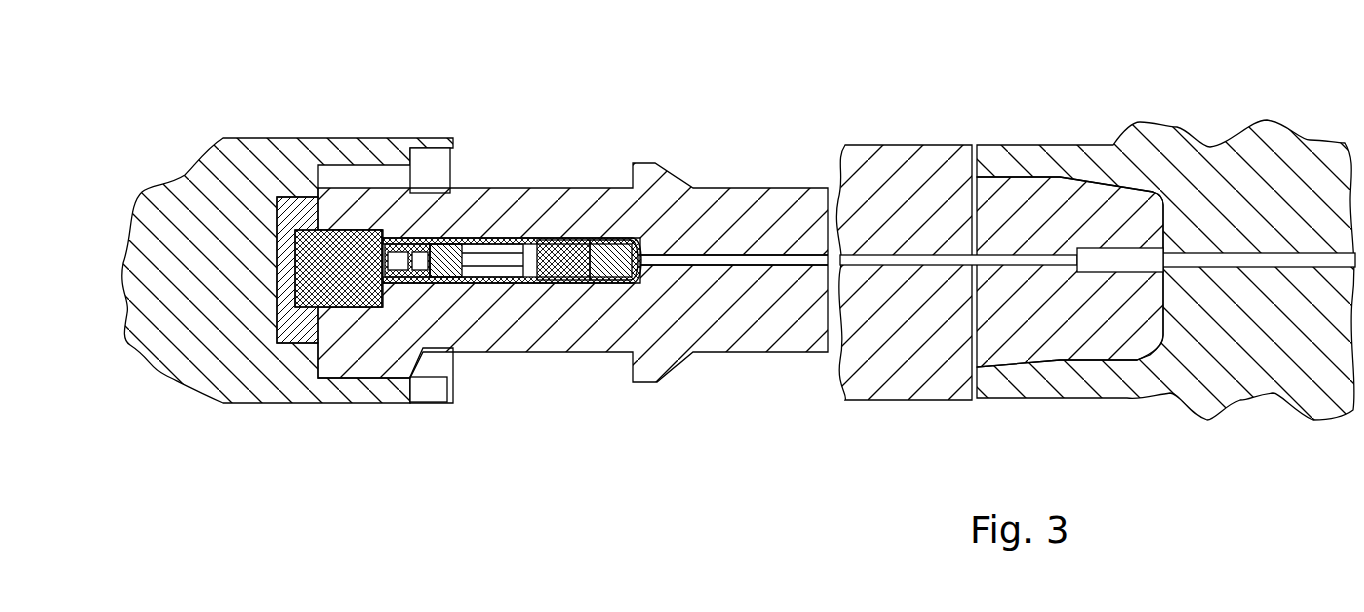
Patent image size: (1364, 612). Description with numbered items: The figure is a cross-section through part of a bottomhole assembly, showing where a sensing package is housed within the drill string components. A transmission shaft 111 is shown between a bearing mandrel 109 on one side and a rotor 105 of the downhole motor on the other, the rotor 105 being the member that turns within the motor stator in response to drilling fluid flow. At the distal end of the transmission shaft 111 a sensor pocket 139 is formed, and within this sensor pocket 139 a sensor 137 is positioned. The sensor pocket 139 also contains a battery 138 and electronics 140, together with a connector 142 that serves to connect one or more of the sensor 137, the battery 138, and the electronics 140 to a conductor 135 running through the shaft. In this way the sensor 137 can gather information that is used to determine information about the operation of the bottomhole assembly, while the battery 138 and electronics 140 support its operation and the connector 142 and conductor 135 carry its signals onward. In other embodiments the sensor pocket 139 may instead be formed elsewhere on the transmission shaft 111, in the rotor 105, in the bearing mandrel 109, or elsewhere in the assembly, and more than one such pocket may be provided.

The rotor 105 is at (1265, 125).
The bearing mandrel 109 is at (195, 163).
The transmission shaft 111 is at (783, 188).
The conductor 135 is at (784, 266).
The sensor 137 is at (517, 238).
The battery 138 is at (445, 283).
The sensor pocket 139 is at (507, 283).
The electronics 140 is at (563, 283).
The connector 142 is at (640, 283).